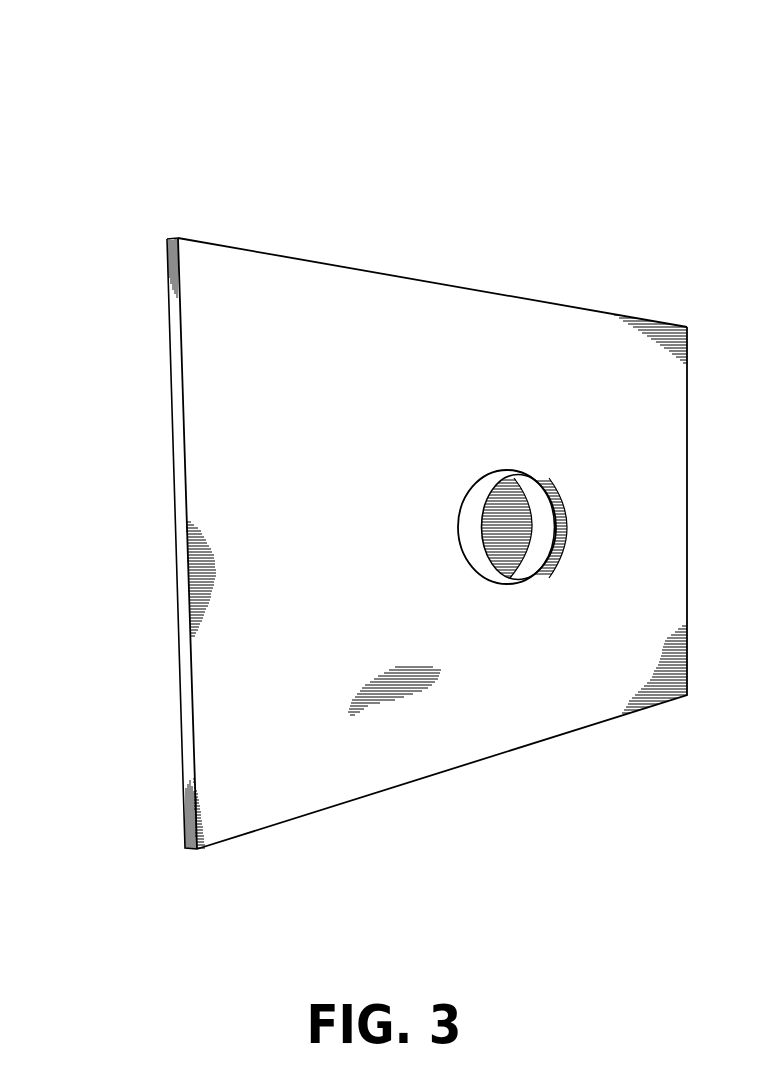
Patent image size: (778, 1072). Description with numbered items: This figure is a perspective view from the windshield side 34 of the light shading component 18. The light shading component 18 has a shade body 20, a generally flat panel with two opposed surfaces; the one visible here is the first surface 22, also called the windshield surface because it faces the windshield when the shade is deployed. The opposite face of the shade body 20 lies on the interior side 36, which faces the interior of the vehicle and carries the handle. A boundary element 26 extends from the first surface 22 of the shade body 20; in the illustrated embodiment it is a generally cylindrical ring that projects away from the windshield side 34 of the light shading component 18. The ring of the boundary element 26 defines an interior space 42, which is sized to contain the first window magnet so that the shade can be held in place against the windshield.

The light shading component 18 is at (356, 436).
The shade body 20 is at (369, 543).
The first surface 22 is at (614, 313).
The boundary element 26 is at (549, 525).
The windshield side 34 is at (618, 760).
The interior side 36 is at (109, 771).
The interior space 42 is at (513, 508).